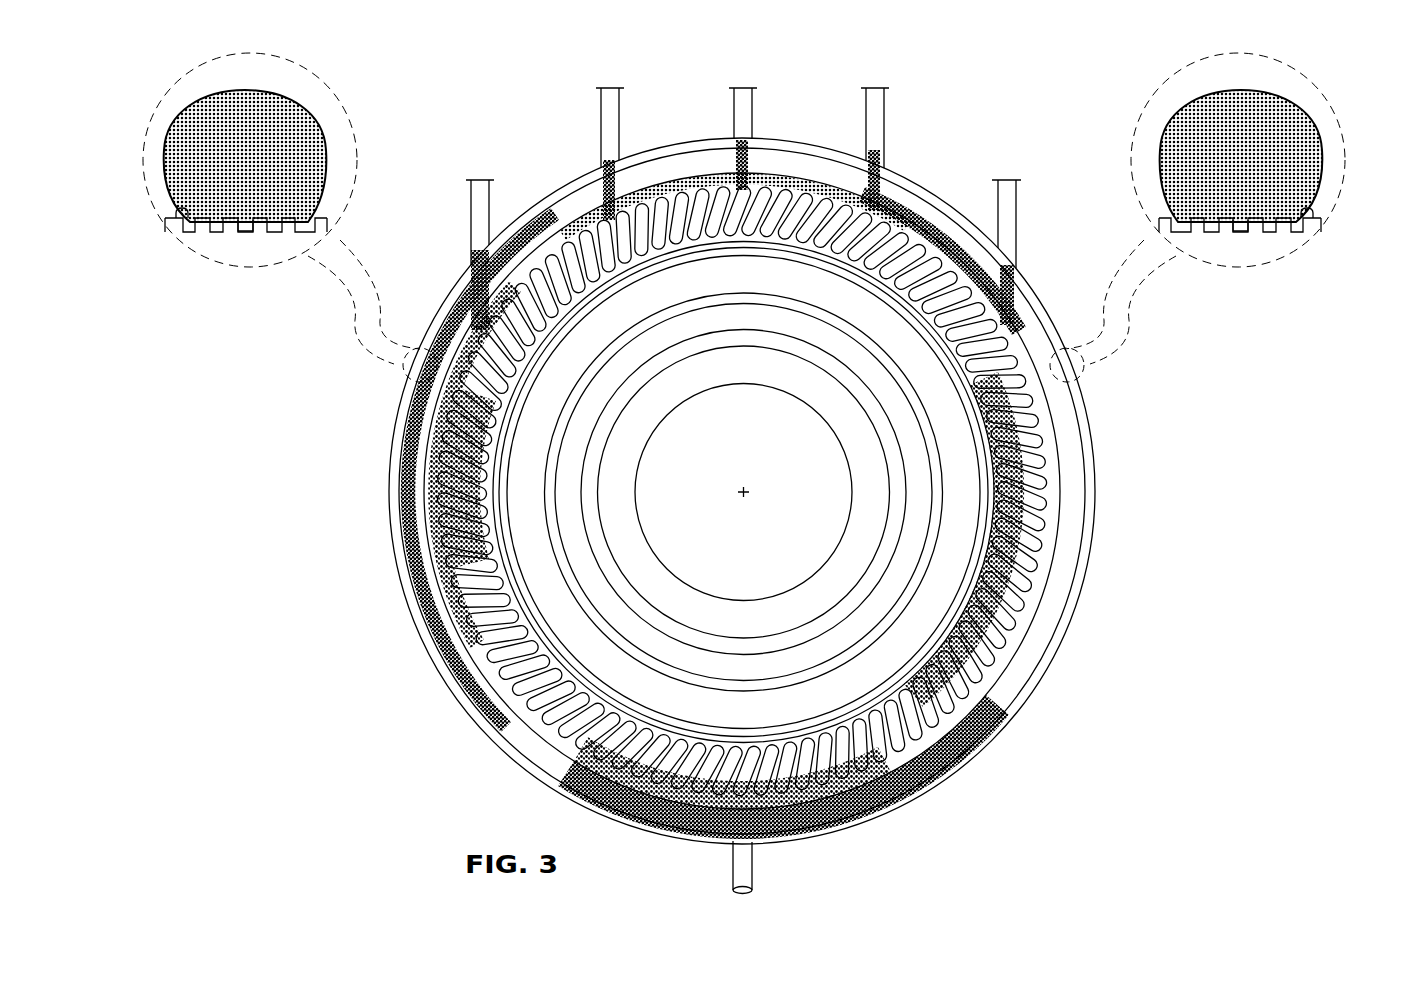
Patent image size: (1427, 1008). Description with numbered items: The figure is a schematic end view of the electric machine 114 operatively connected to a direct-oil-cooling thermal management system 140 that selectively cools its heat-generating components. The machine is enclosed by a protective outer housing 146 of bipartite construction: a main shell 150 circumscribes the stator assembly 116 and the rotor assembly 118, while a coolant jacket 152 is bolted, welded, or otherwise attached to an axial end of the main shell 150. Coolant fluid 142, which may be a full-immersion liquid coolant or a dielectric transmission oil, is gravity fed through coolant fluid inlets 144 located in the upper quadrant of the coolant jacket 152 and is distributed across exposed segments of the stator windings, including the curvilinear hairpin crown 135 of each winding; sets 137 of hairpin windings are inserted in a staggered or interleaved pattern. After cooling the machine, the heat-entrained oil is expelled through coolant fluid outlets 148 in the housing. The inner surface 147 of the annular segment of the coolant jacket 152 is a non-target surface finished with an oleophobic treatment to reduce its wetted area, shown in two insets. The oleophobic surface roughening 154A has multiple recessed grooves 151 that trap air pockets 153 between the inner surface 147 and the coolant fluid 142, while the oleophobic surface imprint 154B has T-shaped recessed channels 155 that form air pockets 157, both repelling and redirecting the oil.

The electric machine 114 is at (968, 112).
The stator assembly 116 is at (1070, 492).
The rotor assembly 118 is at (993, 554).
The hairpin crown 135 is at (510, 680).
The sets of hairpin stator windings 137 is at (508, 734).
The direct-oil-cooling thermal management system 140 is at (546, 130).
The coolant fluid 142 is at (308, 115).
The coolant fluid inlets 144 is at (489, 200).
The outer housing 146 is at (374, 407).
The inner surface 147 is at (400, 476).
The coolant fluid outlets 148 is at (753, 862).
The main shell 150 is at (392, 530).
The recessed grooves 151 is at (178, 220).
The coolant jacket 152 is at (405, 427).
The air pockets 153 is at (246, 232).
The oleophobic surface roughening 154A is at (165, 232).
The oleophobic surface imprint 154B is at (1306, 226).
The T-shaped recessed channels 155 is at (1308, 220).
The air pockets 157 is at (1240, 232).